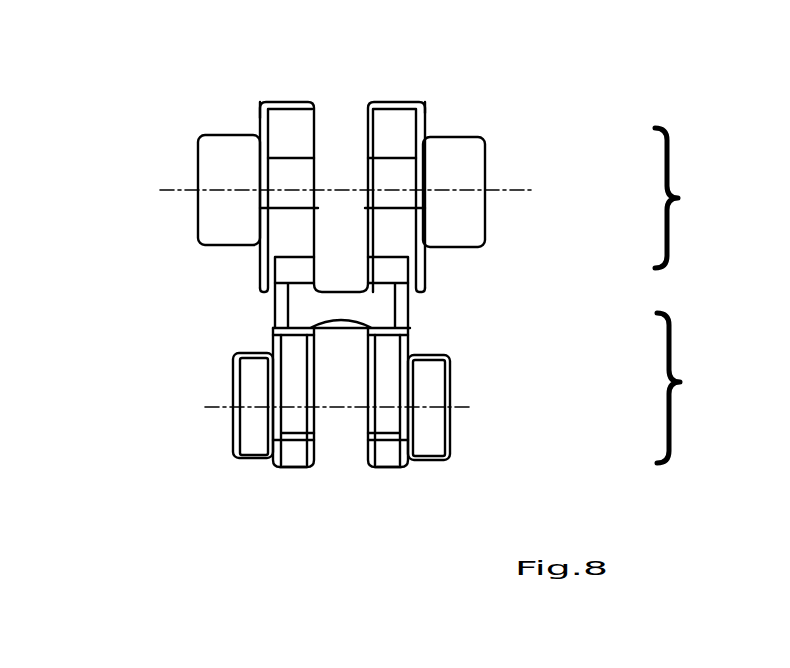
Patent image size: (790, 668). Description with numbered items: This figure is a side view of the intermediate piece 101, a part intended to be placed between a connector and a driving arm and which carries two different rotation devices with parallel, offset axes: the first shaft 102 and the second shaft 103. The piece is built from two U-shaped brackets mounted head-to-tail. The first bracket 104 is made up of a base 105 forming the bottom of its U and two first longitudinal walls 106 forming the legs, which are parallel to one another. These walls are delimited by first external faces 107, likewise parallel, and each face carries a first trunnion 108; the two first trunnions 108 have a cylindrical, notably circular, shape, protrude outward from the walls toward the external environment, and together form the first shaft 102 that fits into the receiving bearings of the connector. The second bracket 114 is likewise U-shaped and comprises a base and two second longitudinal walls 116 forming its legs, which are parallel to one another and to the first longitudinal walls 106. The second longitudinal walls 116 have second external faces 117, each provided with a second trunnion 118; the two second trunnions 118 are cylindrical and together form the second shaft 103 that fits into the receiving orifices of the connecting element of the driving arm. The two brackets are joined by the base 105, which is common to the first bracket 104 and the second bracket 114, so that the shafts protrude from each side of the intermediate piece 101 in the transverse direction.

The intermediate piece 101 is at (487, 284).
The first shaft 102 is at (318, 401).
The second shaft 103 is at (367, 190).
The first bracket 104 is at (692, 388).
The base 105 is at (275, 308).
The first longitudinal walls 106 is at (288, 468).
The first external faces 107 is at (273, 348).
The first trunnions 108 is at (233, 424).
The second bracket 114 is at (688, 198).
The second longitudinal walls 116 is at (286, 102).
The second external faces 117 is at (260, 118).
The second trunnions 118 is at (198, 211).